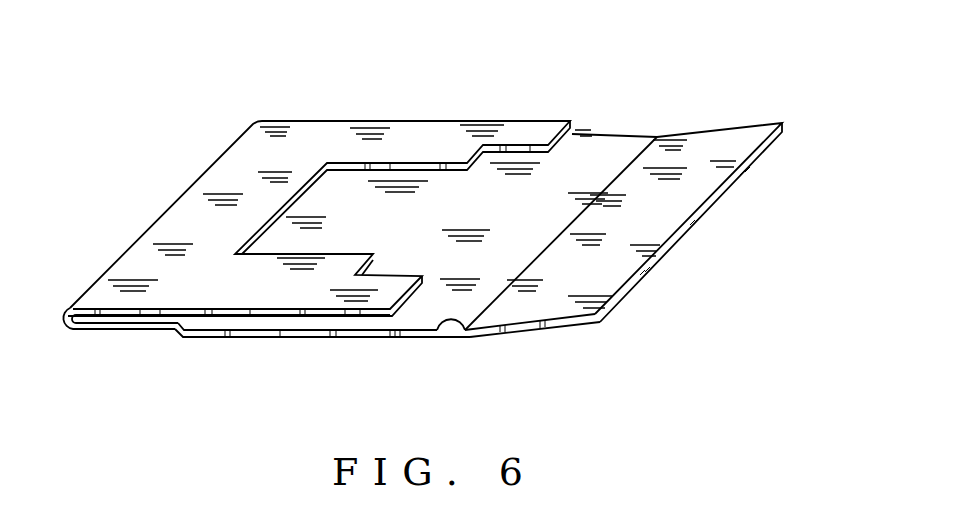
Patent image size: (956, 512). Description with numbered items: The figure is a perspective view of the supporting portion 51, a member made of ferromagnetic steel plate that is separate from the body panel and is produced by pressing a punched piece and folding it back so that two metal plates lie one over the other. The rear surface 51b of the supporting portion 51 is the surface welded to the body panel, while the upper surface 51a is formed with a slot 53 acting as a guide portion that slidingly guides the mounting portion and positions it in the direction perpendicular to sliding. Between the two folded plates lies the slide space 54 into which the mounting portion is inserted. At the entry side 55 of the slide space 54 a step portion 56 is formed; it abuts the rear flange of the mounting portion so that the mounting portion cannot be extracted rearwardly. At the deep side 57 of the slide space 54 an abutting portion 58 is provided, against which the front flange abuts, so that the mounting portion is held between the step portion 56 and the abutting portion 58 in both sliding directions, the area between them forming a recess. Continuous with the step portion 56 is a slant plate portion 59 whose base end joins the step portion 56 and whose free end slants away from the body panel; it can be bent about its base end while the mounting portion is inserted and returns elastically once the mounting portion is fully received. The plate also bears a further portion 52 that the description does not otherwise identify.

The supporting portion 51 is at (352, 121).
The surface 51a is at (298, 132).
The rear surface 51b is at (260, 340).
The top edge strip / tab portion 52 is at (433, 132).
The slot 53 is at (313, 252).
The slide space 54 is at (357, 318).
The entry side 55 is at (563, 187).
The step portion 56 is at (437, 336).
The deep side 57 is at (207, 323).
The abutting portion 58 is at (190, 335).
The slant plate portion 59 is at (640, 217).